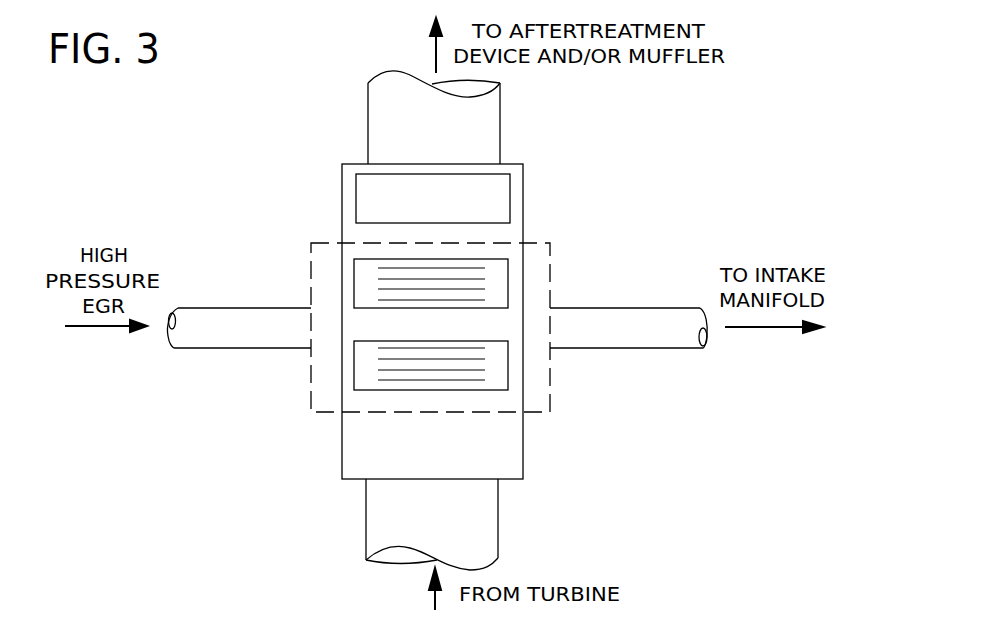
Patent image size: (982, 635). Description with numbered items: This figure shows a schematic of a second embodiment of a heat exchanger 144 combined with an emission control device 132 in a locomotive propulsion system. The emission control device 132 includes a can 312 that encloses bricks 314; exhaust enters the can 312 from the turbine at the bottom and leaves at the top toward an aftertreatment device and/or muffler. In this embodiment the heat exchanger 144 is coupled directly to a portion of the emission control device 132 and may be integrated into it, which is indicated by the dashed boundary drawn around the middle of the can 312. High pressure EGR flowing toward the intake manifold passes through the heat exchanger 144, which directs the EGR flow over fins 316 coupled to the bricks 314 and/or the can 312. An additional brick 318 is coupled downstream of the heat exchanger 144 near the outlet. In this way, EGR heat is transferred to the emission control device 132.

The emission control device 132 is at (570, 497).
The can 312 is at (523, 462).
The brick 318 is at (355, 205).
The heat exchanger 144 is at (550, 277).
The bricks 314 is at (354, 365).
The fins 316 is at (460, 314).